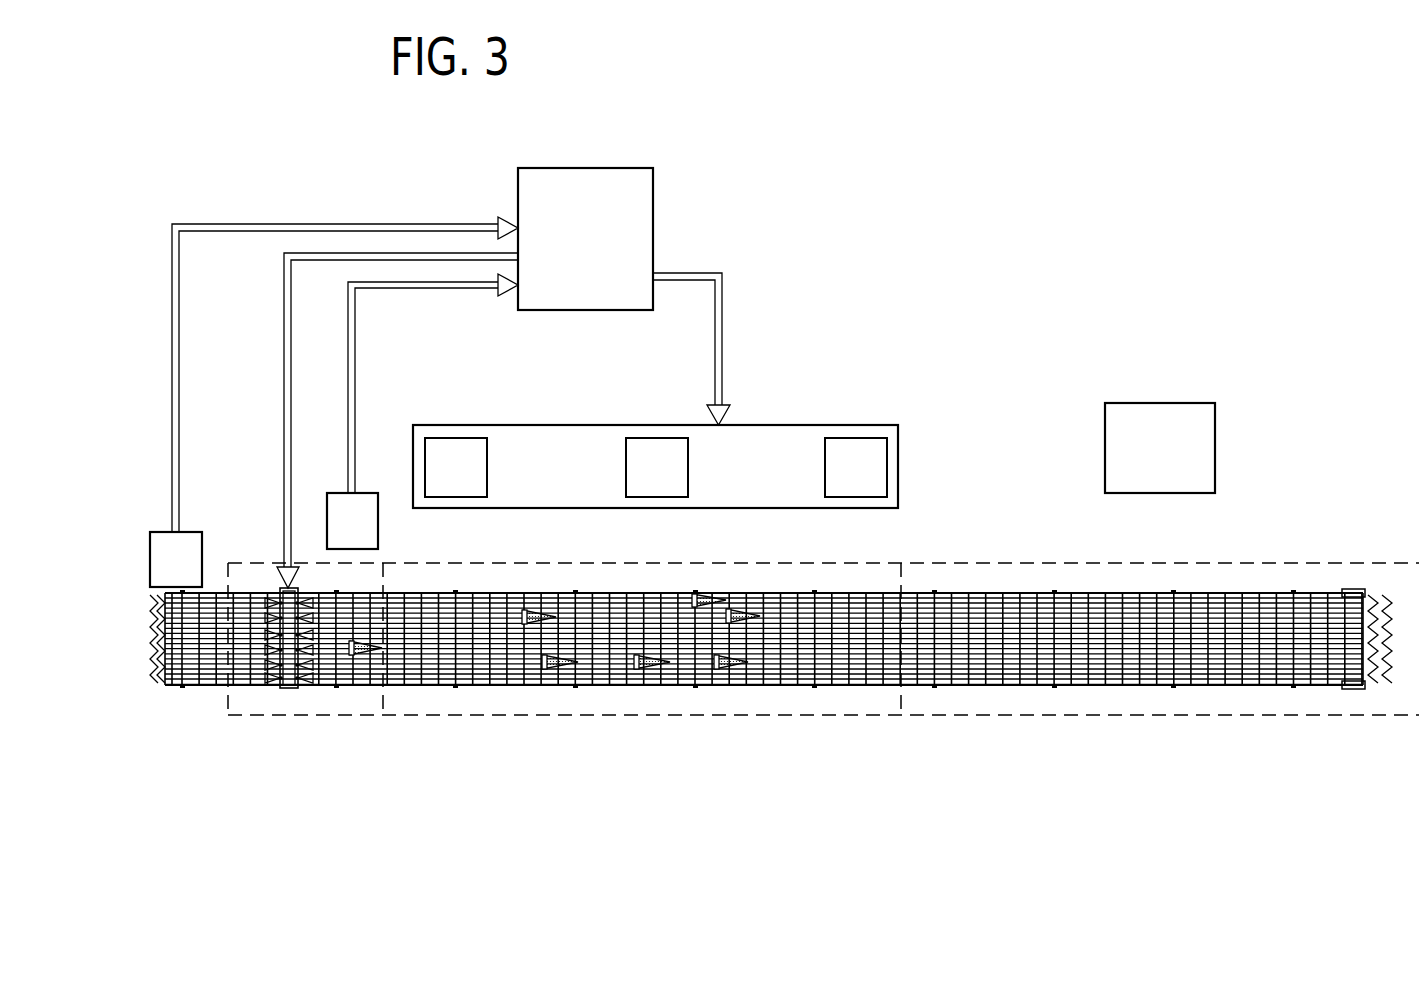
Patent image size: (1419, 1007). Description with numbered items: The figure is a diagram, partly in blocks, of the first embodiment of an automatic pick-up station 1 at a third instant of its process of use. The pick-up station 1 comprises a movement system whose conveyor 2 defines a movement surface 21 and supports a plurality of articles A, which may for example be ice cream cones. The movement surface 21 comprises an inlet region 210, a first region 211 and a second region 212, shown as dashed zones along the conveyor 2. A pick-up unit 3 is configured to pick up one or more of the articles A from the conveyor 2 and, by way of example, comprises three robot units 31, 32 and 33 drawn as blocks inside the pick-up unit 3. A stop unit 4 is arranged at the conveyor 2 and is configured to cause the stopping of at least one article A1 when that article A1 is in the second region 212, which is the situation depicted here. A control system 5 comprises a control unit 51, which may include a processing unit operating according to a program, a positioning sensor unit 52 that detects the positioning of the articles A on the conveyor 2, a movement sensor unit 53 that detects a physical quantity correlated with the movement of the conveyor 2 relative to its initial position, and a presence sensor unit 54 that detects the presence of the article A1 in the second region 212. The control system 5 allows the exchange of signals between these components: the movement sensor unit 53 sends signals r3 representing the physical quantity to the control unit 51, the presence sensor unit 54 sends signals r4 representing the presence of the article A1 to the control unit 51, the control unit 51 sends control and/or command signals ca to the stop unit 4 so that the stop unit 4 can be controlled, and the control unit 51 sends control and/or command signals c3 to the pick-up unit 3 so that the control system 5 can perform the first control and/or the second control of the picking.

The pick-up station 1 is at (1232, 203).
The conveyor 2 is at (1270, 612).
The pick-up unit 3 is at (669, 412).
The stop unit 4 is at (300, 690).
The control system 5 is at (242, 158).
The movement surface 21 is at (1312, 722).
The robot unit 31 is at (470, 478).
The robot unit 32 is at (671, 478).
The robot unit 33 is at (870, 478).
The control unit 51 is at (600, 246).
The positioning sensor unit 52 is at (1174, 458).
The movement sensor unit 53 is at (192, 575).
The presence sensor unit 54 is at (368, 536).
The inlet region 210 is at (1230, 715).
The first region 211 is at (870, 700).
The second region 212 is at (373, 707).
The articles A is at (523, 622).
The article A1 is at (360, 680).
The signals representing the physical quantity r3 is at (172, 323).
The signals representing the presence r4 is at (356, 376).
The control and/or command signals of the stop unit ca is at (285, 404).
The control and/or command signals of the pick-up unit c3 is at (722, 350).